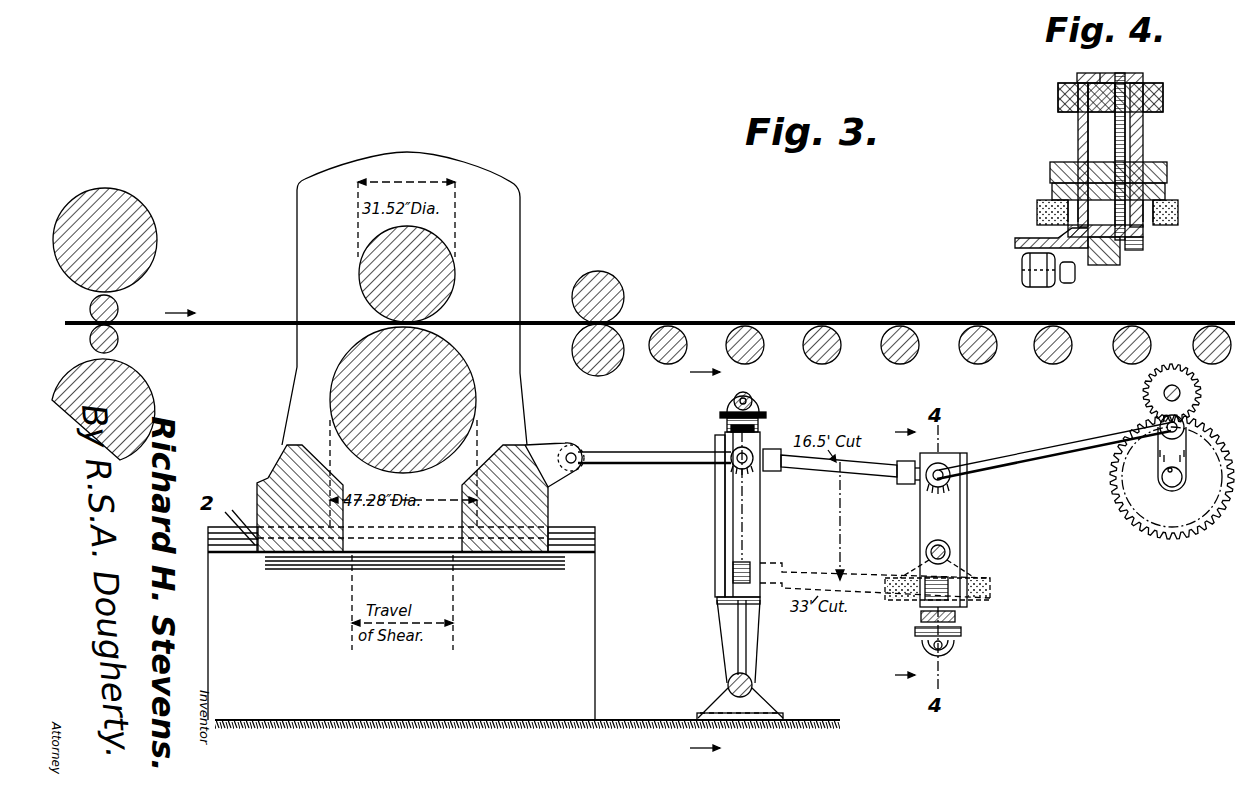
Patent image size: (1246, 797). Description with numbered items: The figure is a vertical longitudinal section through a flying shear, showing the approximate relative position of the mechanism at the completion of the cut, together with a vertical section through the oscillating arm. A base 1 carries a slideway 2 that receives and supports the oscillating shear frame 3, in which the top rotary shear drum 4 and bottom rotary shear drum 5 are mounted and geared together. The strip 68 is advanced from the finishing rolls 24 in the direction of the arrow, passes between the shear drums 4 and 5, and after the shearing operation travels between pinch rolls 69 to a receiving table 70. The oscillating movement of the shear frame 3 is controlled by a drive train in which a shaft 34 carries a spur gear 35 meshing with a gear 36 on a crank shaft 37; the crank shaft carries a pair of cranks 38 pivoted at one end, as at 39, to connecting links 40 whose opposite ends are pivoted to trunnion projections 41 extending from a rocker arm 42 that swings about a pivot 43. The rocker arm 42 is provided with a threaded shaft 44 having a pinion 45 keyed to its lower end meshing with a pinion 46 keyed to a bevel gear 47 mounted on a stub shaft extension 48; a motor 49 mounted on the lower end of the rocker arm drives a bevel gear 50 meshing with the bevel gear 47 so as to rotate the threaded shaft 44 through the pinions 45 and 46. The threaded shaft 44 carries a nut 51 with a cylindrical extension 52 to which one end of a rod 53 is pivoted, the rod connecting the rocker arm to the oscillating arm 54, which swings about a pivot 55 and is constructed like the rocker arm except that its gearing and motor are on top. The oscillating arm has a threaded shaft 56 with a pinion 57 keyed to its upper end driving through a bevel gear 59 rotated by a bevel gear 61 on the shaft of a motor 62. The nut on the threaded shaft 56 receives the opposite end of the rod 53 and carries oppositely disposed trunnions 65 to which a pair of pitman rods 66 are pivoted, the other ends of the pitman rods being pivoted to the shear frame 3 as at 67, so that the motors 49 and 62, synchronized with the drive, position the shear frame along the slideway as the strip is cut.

In FIG. 3, the base 1 is at (583, 632).
In FIG. 3, the slideway 2 is at (745, 564).
In FIG. 3, the oscillating shear frame 3 is at (515, 235).
In FIG. 3, the top rotary shear drum 4 is at (360, 268).
In FIG. 3, the bottom rotary shear drum 5 is at (345, 365).
In FIG. 3, the finishing rolls 24 is at (150, 207).
In FIG. 3, the shaft 34 is at (1163, 393).
In FIG. 3, the spur gear 35 is at (1146, 403).
In FIG. 3, the gear 36 is at (1128, 518).
In FIG. 3, the crank shaft 37 is at (1162, 480).
In FIG. 3, the cranks 38 is at (1158, 458).
In FIG. 3, the pivot 39 is at (1185, 426).
In FIG. 3, the connecting links 40 is at (1048, 448).
In FIG. 4, the connecting links 40 is at (1060, 85).
In FIG. 3, the trunnion projections 41 is at (945, 470).
In FIG. 4, the trunnion projections 41 is at (1060, 98).
In FIG. 3, the rocker arm 42 is at (952, 520).
In FIG. 4, the rocker arm 42 is at (1140, 78).
In FIG. 3, the pivot 43 is at (926, 550).
In FIG. 4, the pivot 43 is at (1050, 175).
In FIG. 3, the threaded shaft 44 is at (950, 585).
In FIG. 4, the threaded shaft 44 is at (1127, 160).
In FIG. 3, the pinion 45 is at (957, 617).
In FIG. 4, the pinion 45 is at (1145, 245).
In FIG. 4, the pinion 46 is at (1060, 238).
In FIG. 3, the bevel gear 47 is at (916, 633).
In FIG. 4, the bevel gear 47 is at (1120, 258).
In FIG. 4, the stub shaft extension 48 is at (1095, 262).
In FIG. 3, the motor 49 is at (955, 648).
In FIG. 4, the motor 49 is at (1040, 285).
In FIG. 3, the bevel gear 50 is at (950, 656).
In FIG. 4, the bevel gear 50 is at (1068, 283).
In FIG. 4, the nut 51 is at (1080, 120).
In FIG. 4, the cylindrical extension 52 is at (1090, 112).
In FIG. 3, the rod 53 is at (882, 478).
In FIG. 4, the rod 53 is at (1102, 74).
In FIG. 3, the oscillating arm 54 is at (727, 522).
In FIG. 3, the pivot 55 is at (753, 686).
In FIG. 3, the threaded shaft 56 is at (733, 573).
In FIG. 3, the pinion 57 is at (762, 421).
In FIG. 3, the bevel gear 59 is at (727, 420).
In FIG. 3, the bevel gear 61 is at (760, 398).
In FIG. 3, the motor 62 is at (726, 403).
In FIG. 3, the trunnions 65 is at (732, 466).
In FIG. 3, the pitman rods 66 is at (628, 466).
In FIG. 3, the pivot 67 is at (578, 452).
In FIG. 3, the strip 68 is at (262, 310).
In FIG. 3, the pinch rolls 69 is at (620, 335).
In FIG. 3, the receiving table 70 is at (893, 323).